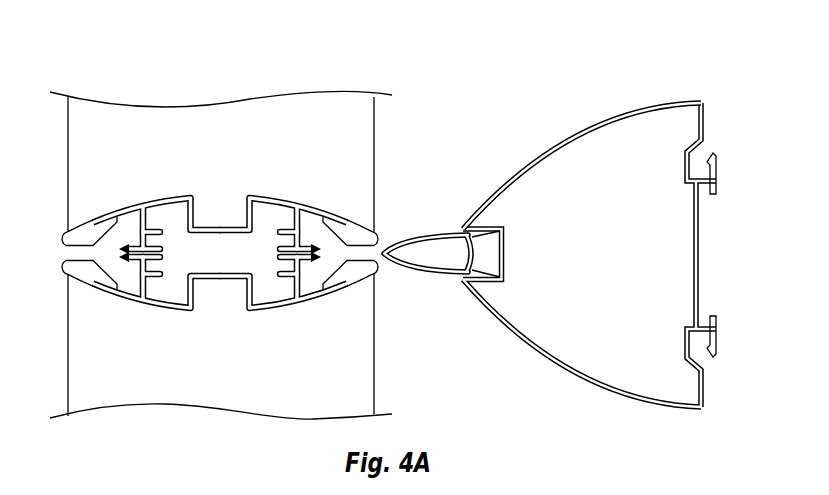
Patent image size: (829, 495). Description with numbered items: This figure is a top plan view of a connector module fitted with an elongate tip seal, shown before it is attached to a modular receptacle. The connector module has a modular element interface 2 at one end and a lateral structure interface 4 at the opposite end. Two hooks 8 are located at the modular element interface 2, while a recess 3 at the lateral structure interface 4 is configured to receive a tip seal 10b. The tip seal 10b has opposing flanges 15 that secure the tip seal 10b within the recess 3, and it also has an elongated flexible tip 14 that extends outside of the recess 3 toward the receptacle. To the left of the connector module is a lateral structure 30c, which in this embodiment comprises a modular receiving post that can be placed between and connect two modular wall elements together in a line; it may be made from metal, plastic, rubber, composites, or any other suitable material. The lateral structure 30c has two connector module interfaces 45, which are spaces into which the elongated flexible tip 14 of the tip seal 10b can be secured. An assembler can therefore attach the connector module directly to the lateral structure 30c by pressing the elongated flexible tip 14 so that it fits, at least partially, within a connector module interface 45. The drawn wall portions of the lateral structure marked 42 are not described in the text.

The lateral structure 30c is at (218, 220).
The panel wall 42 is at (67, 121).
The connector module interface 45 is at (86, 254).
The lateral structure interface 4 is at (579, 240).
The recess 3 is at (512, 235).
The modular element interface 2 is at (618, 255).
The hook 8 is at (722, 166).
The elongated flexible tip 14 is at (407, 273).
The opposing flange 15 is at (460, 243).
The tip seal 10b is at (447, 286).